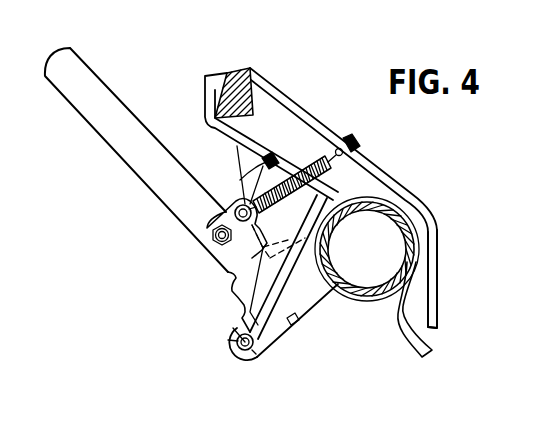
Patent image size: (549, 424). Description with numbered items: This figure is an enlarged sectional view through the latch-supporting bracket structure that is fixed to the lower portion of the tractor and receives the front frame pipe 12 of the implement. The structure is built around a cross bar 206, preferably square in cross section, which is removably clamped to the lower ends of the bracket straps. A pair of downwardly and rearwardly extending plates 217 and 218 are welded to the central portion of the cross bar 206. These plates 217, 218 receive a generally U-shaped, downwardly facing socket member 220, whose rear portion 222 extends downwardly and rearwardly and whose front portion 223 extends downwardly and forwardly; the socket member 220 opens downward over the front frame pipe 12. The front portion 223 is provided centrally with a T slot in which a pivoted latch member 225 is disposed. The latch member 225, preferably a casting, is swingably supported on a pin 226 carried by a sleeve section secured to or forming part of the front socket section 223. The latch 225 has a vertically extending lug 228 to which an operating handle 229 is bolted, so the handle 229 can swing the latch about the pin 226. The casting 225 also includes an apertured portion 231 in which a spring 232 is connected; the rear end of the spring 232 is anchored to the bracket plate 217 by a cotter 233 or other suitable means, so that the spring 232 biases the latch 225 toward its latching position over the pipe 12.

The front frame pipe 12 is at (415, 228).
The cross bar 206 is at (225, 88).
The plate 217 is at (302, 116).
The plate 218 is at (233, 139).
The socket member 220 is at (422, 294).
The rear portion of socket member 222 is at (418, 323).
The front portion of socket member 223 is at (250, 313).
The latch member 225 is at (282, 327).
The pin 226 is at (242, 347).
The lug 228 is at (230, 262).
The operating handle 229 is at (145, 165).
The apertured portion 231 is at (242, 204).
The spring 232 is at (300, 171).
The cotter 233 is at (347, 155).